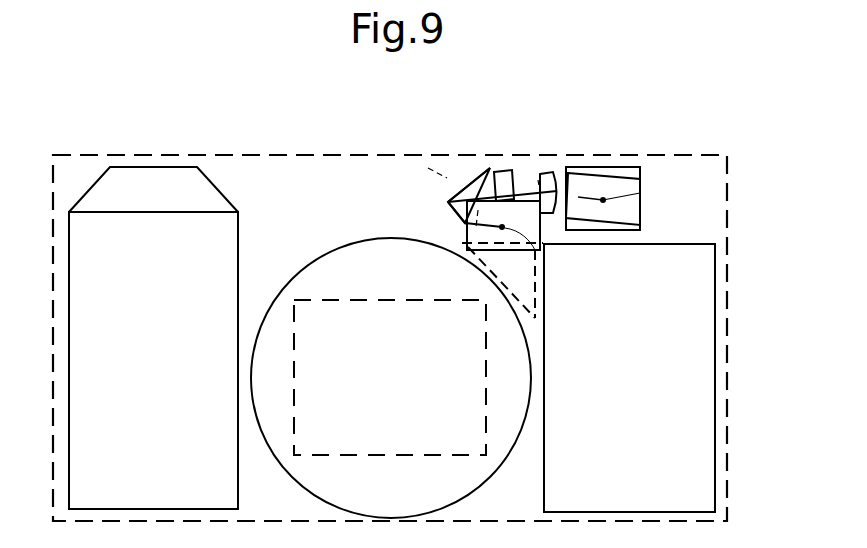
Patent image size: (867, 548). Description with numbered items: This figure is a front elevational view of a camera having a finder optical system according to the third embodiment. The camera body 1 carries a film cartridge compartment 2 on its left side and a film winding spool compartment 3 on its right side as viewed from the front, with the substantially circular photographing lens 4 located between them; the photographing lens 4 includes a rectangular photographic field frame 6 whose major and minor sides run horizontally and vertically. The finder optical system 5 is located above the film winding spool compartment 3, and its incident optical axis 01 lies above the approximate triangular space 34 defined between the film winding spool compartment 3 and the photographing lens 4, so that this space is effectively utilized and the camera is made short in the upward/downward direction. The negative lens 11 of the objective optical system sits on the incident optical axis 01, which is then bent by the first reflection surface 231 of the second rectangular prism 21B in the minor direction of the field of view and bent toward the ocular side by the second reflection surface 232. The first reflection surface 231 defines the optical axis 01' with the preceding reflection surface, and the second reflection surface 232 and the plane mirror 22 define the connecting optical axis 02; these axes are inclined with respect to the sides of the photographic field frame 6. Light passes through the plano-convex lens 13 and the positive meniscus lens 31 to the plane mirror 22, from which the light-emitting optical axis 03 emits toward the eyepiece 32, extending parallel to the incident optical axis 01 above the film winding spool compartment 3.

The camera body 1 is at (88, 177).
The film cartridge compartment 2 is at (102, 305).
The film winding spool compartment 3 is at (688, 338).
The photographing lens 4 is at (293, 292).
The finder optical system 5 is at (557, 143).
The photographic field frame 6 is at (340, 300).
The negative lens 11 is at (527, 223).
The plano-convex lens 13 is at (508, 177).
The second rectangular prism 21B is at (452, 192).
The plane mirror 22 is at (608, 213).
The positive meniscus lens 31 is at (552, 176).
The eyepiece 32 is at (640, 172).
The approximate triangular space 34 is at (550, 310).
The first reflection surface 231 is at (458, 216).
The second reflection surface 232 is at (468, 184).
The incident optical axis 01 is at (570, 272).
The optical axis 01' is at (487, 167).
The connecting optical axis 02 is at (538, 180).
The light-emitting optical axis 03 is at (640, 193).